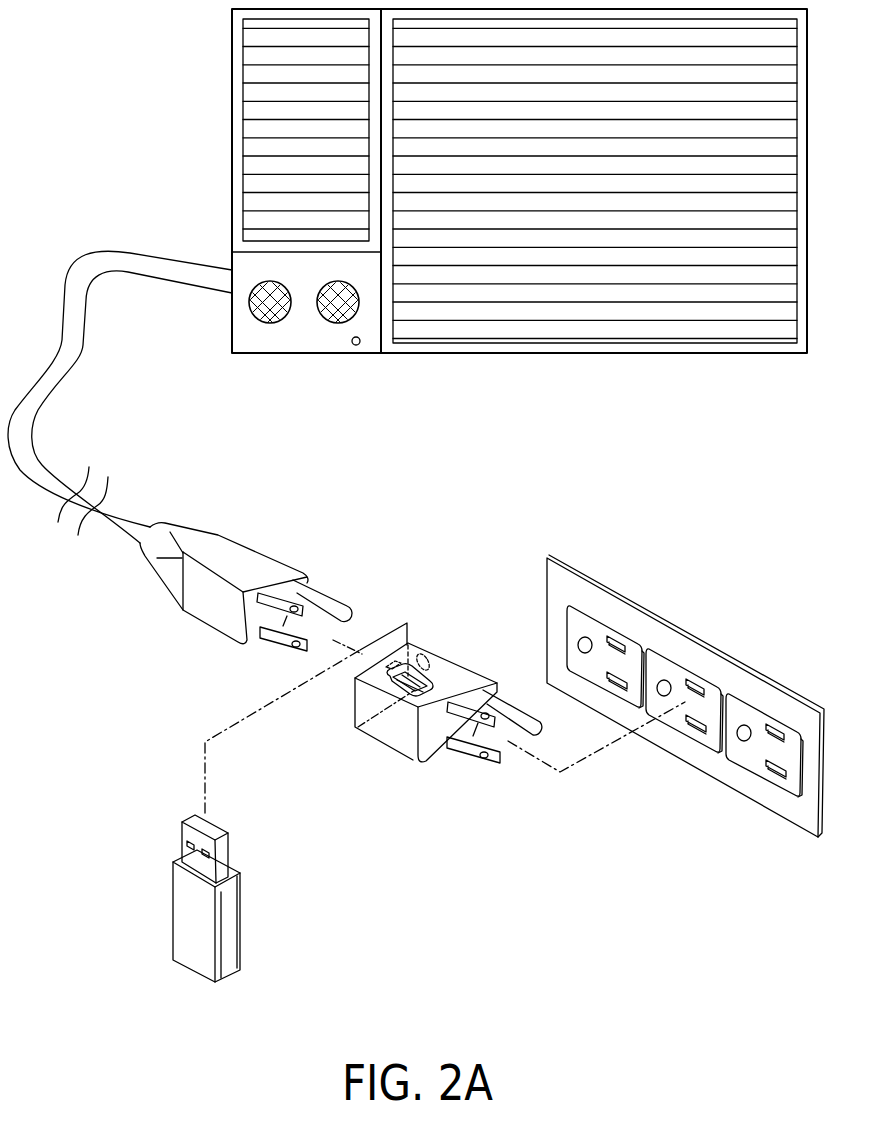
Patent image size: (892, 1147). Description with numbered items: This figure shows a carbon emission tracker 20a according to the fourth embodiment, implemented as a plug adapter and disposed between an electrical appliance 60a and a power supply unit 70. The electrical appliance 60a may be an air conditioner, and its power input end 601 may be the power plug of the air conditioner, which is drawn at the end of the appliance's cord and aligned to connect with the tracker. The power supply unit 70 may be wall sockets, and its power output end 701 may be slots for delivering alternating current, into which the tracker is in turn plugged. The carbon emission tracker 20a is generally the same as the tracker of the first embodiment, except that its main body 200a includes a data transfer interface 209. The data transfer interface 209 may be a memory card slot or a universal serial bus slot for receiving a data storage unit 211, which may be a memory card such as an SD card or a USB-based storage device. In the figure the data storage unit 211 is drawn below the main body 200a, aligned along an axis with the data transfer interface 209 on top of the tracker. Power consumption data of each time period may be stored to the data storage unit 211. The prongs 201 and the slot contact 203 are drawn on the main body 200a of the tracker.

The electrical appliance 60a is at (224, 71).
The power input end 601 is at (217, 607).
The carbon emission tracker 20a is at (412, 706).
The main body 200a is at (458, 667).
The plug prongs of adaptor 201 is at (498, 770).
The USB socket contact 203 is at (390, 660).
The data transfer interface 209 is at (357, 721).
The data storage unit 211 is at (173, 910).
The power supply unit 70 is at (685, 688).
The power output end 701 is at (748, 768).